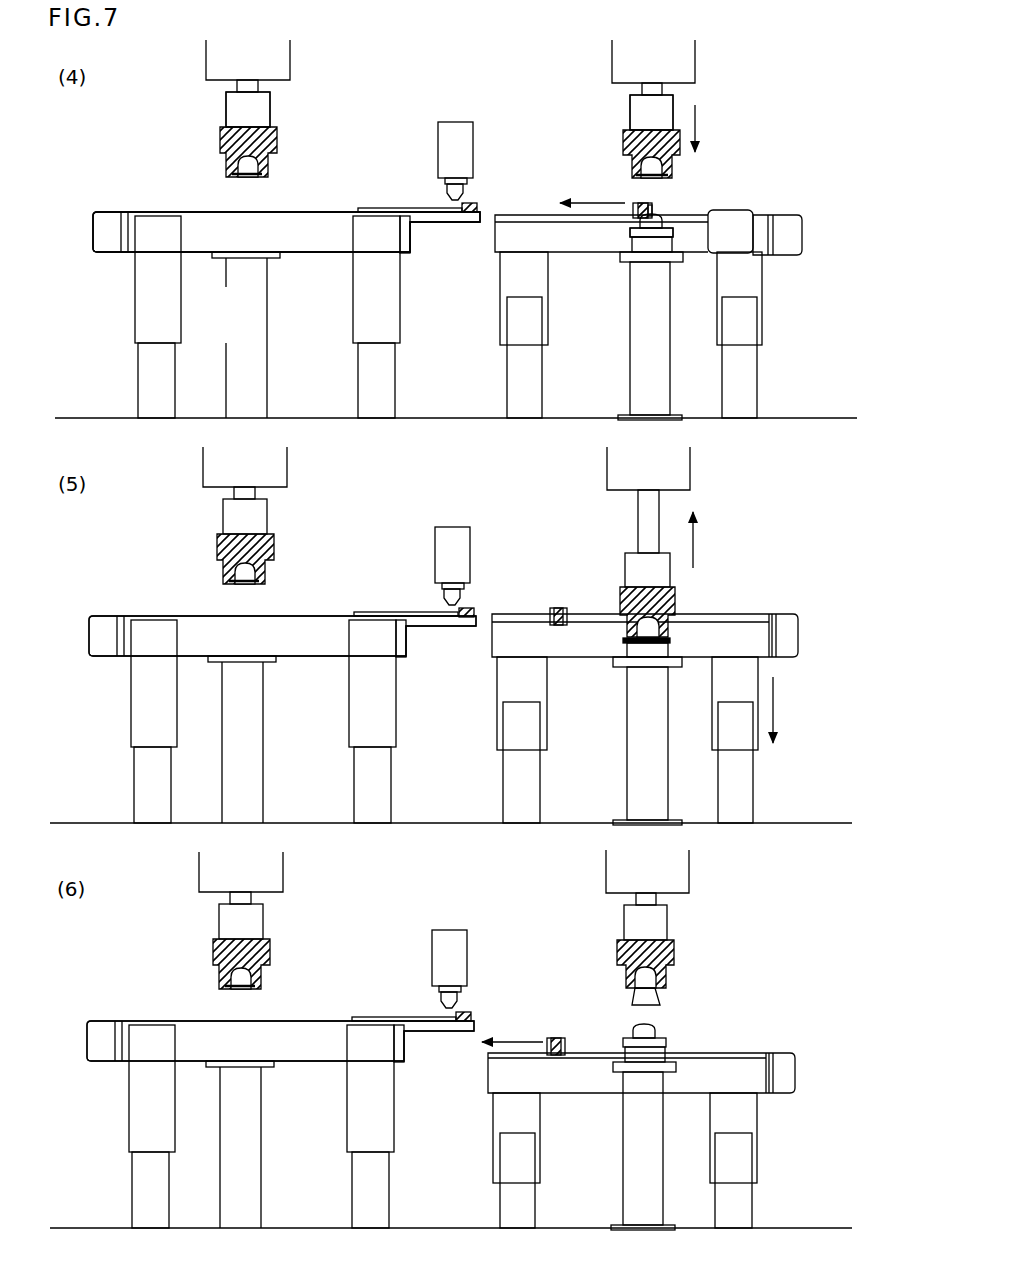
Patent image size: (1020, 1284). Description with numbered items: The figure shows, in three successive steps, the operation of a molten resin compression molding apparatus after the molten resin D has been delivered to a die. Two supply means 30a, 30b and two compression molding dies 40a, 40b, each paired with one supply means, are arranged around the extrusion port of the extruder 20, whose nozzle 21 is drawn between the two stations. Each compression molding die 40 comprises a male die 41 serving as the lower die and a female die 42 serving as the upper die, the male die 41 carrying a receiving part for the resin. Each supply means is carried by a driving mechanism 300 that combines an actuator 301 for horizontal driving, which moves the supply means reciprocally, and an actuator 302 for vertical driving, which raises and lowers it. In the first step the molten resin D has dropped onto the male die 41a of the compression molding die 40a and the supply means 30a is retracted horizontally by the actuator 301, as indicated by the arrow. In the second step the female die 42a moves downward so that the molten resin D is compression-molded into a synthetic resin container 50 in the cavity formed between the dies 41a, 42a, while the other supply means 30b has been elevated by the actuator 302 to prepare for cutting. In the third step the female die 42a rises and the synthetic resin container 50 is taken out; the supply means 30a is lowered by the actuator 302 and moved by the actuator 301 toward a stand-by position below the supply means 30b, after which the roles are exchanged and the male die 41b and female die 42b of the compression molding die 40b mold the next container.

The extruder 20 is at (484, 525).
The dispensing nozzle 21 is at (455, 143).
The supply means 30a is at (626, 192).
The supply means 30b is at (467, 222).
The compression molding die 40 is at (456, 635).
The compression molding die 40a is at (737, 635).
The compression molding die 40b is at (261, 550).
The male die 41 is at (383, 232).
The male die 41a is at (662, 222).
The male die 41b is at (247, 212).
The female die 42 is at (449, 111).
The female die 42a is at (683, 160).
The female die 42b is at (220, 150).
The driving mechanism 300 is at (478, 718).
The actuator for horizontal driving 301 is at (312, 237).
The actuator for vertical driving 302 is at (377, 330).
The synthetic resin container 50 is at (632, 997).
The molten resin D is at (655, 207).